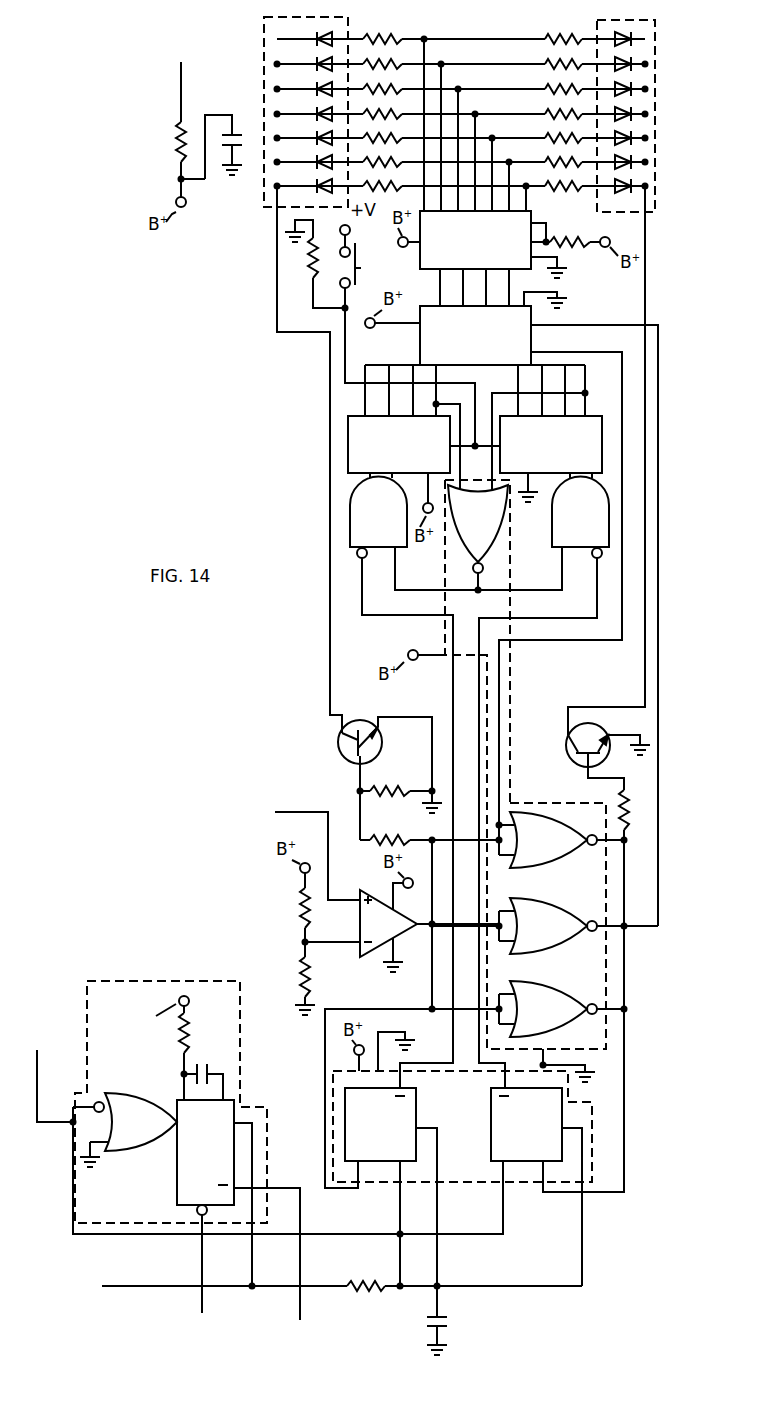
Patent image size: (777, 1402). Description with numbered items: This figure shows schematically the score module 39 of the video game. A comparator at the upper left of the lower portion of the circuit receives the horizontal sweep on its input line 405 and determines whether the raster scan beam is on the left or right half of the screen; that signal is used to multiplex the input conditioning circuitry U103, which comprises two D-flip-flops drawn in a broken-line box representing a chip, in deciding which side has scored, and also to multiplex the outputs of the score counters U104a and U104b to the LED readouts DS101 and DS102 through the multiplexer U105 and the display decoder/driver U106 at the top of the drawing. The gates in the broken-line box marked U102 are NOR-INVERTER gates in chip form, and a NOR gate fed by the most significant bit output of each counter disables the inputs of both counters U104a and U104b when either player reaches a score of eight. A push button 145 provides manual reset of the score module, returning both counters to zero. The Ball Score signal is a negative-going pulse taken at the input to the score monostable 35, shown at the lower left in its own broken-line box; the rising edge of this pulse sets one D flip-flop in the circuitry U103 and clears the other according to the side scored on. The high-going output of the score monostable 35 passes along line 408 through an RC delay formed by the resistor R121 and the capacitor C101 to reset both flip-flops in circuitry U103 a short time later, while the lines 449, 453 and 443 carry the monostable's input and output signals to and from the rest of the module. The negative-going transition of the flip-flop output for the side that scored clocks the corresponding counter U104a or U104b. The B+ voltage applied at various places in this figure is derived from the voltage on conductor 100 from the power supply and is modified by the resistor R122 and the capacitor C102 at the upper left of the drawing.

The conductor 100 is at (178, 80).
The capacitor C102 is at (248, 101).
The resistor R122 is at (170, 128).
The LED readout DS101 is at (262, 196).
The LED readout DS102 is at (657, 127).
The push button 145 is at (362, 269).
The decoder/driver U106 is at (534, 252).
The multiplexer U105 is at (531, 323).
The score counter U104a is at (348, 430).
The score counter U104b is at (604, 428).
The score module 39 is at (254, 632).
The input line 405 is at (283, 811).
The NOR-INVERTER gates U102 is at (607, 910).
The score monostable 35 is at (150, 981).
The signal line 449 is at (86, 1254).
The input conditioning circuitry U103 is at (592, 1140).
The resistor R121 is at (371, 1282).
The signal line 408 is at (148, 1288).
The signal line 453 is at (204, 1297).
The signal line 443 is at (306, 1318).
The capacitor C101 is at (447, 1318).